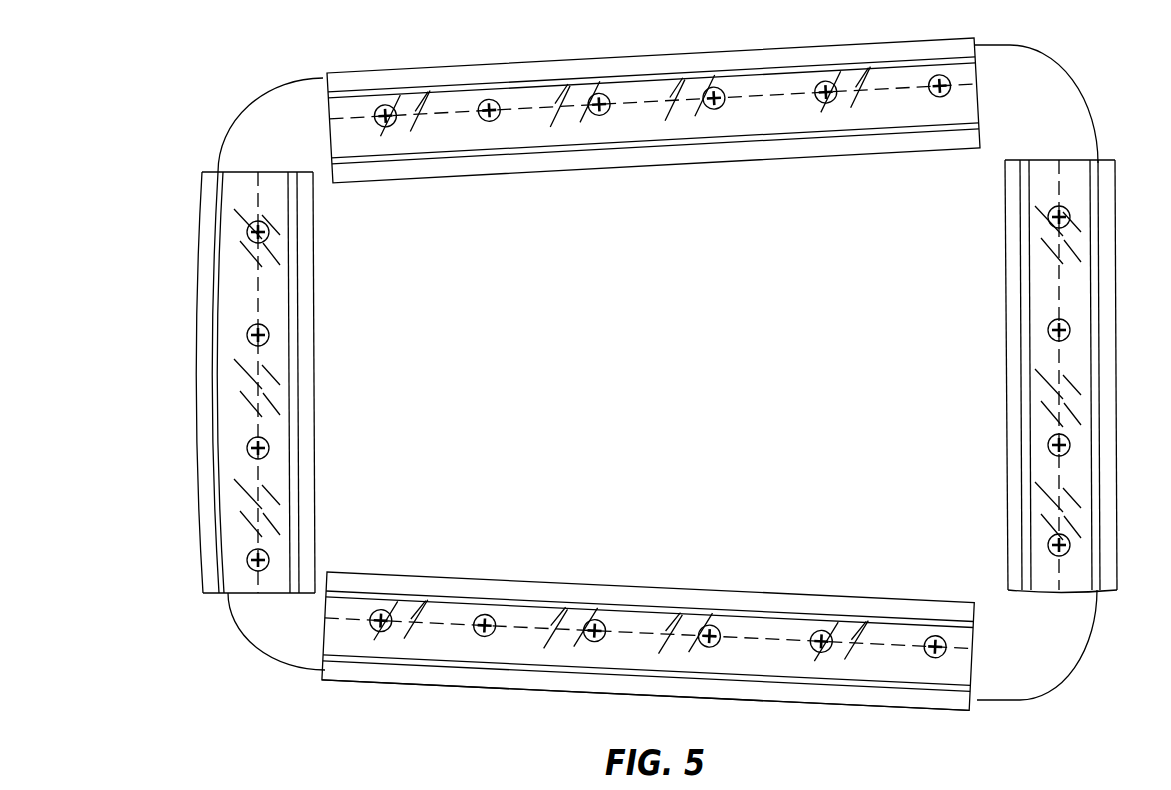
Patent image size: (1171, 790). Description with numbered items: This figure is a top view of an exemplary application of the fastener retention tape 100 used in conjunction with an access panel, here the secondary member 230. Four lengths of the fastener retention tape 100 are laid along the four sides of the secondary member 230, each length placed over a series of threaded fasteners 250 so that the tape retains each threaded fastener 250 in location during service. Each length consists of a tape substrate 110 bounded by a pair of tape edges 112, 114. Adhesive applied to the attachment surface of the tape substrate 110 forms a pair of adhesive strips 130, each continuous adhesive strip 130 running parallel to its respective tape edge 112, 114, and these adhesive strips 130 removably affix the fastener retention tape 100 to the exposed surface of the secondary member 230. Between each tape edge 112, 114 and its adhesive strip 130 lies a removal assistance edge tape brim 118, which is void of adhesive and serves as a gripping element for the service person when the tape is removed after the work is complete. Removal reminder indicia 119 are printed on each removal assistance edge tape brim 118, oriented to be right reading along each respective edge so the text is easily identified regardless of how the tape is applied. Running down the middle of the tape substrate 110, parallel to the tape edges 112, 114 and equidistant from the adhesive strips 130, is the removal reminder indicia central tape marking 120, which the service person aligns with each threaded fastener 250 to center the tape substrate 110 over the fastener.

The fastener retention tape 100 is at (656, 391).
The tape substrate 110 is at (548, 609).
The tape edge 112 is at (600, 686).
The tape edge 114 is at (520, 581).
The removal assistance edge tape brim 118 is at (525, 685).
The removal reminder indicia 119 is at (690, 586).
The removal reminder indicia central tape marking 120 is at (777, 643).
The adhesive strip 130 is at (880, 611).
The secondary member 230 is at (1067, 680).
The threaded fastener 250 is at (386, 614).